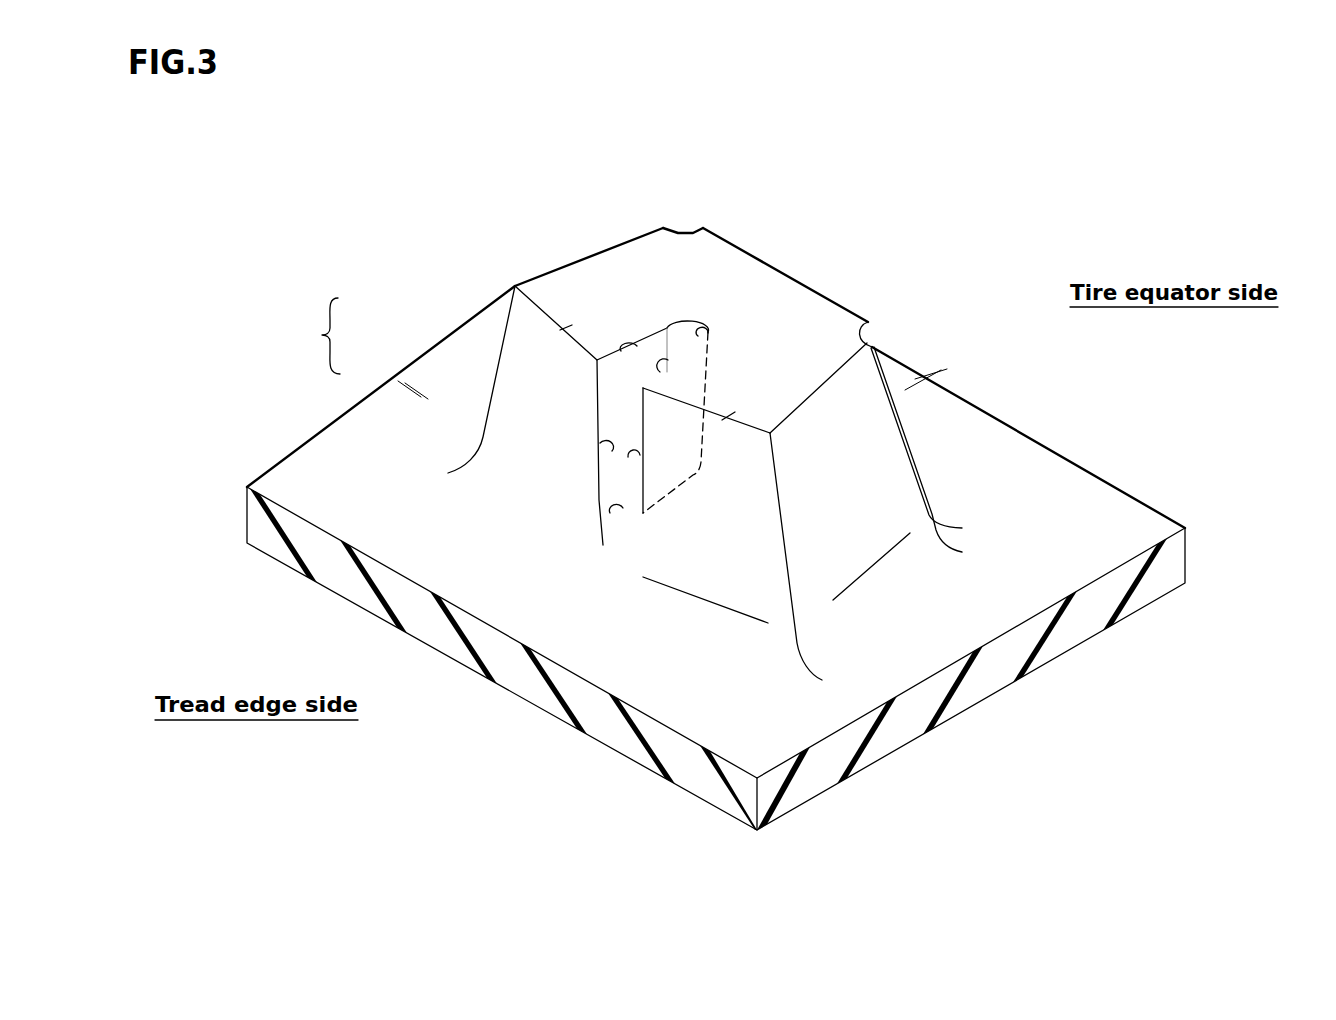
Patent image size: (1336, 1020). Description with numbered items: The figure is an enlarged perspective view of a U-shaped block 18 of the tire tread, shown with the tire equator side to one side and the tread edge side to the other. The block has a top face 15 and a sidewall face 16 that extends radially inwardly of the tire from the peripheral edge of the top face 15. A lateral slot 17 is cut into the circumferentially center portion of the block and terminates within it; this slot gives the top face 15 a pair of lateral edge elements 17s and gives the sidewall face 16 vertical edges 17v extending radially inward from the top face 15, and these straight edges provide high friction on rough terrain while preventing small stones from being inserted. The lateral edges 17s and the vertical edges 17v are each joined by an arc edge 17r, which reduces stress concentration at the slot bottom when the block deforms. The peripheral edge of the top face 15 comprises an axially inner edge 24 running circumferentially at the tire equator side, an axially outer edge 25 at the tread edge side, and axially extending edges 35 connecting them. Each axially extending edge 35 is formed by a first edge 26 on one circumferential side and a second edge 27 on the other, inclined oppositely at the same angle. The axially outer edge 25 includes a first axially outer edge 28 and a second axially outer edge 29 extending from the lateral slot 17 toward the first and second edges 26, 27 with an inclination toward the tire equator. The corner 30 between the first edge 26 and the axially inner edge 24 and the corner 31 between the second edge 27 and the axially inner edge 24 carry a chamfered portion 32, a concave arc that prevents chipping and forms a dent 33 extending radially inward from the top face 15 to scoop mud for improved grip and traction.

The top face 15 is at (718, 258).
The sidewall face 16 is at (527, 448).
The lateral slot 17 is at (660, 357).
The lateral edge element 17s is at (636, 345).
The arc edge 17r is at (643, 388).
The vertical edge 17v is at (608, 452).
The U-shaped block 18 is at (833, 258).
The axially inner edge 24 is at (703, 330).
The axially outer edge 25 is at (511, 368).
The first edge 26 is at (817, 393).
The second edge 27 is at (660, 318).
The first axially outer edge 28 is at (728, 413).
The second axially outer edge 29 is at (568, 327).
The corner 30 is at (873, 320).
The corner 31 is at (684, 232).
The chamfered portion 32 is at (849, 241).
The dent 33 is at (693, 229).
The axially extending edge 35 is at (895, 327).